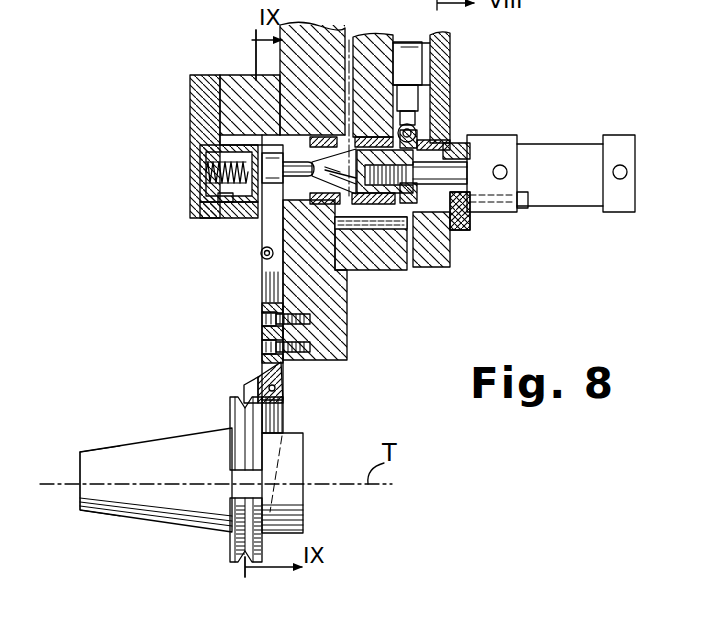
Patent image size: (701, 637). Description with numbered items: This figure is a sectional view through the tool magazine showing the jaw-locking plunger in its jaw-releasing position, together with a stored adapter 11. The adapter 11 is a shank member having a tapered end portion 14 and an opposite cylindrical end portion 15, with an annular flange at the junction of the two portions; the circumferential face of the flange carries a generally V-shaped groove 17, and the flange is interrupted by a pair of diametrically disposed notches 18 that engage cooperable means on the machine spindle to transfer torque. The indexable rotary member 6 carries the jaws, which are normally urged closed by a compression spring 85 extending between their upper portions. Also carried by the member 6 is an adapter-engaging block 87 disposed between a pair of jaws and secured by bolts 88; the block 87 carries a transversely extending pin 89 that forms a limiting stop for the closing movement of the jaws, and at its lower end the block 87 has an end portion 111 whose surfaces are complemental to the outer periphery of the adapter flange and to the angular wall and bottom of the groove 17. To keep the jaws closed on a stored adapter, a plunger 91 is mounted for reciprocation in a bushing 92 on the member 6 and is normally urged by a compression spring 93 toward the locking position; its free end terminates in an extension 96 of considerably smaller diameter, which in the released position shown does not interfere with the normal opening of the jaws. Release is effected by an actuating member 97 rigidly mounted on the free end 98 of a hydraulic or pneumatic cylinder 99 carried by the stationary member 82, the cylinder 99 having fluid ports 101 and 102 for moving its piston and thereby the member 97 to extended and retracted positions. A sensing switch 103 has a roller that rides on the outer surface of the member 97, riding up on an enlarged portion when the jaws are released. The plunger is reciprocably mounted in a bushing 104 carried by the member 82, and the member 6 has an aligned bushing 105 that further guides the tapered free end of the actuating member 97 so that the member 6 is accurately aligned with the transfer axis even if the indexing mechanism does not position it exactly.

The rotary member 6 is at (342, 322).
The adapter 11 is at (146, 440).
The tapered end portion 14 is at (103, 452).
The cylindrical end portion 15 is at (298, 436).
The V-shaped groove 17 is at (243, 455).
The notches 18 is at (265, 520).
The stationary member 82 is at (460, 60).
The compression spring 85 is at (260, 256).
The adapter-engaging block 87 is at (292, 381).
The bolts 88 is at (262, 344).
The pin 89 is at (265, 382).
The plunger 91 is at (200, 149).
The bushing 92 is at (212, 132).
The compression spring 93 is at (204, 176).
The extension 96 is at (283, 193).
The actuating member 97 is at (345, 158).
The free end 98 is at (466, 222).
The cylinder 99 is at (568, 145).
The fluid port 101 is at (627, 167).
The fluid port 102 is at (507, 166).
The sensing switch 103 is at (419, 90).
The bushing 104 is at (424, 267).
The aligned bushing 105 is at (365, 270).
The end portion 111 is at (248, 388).